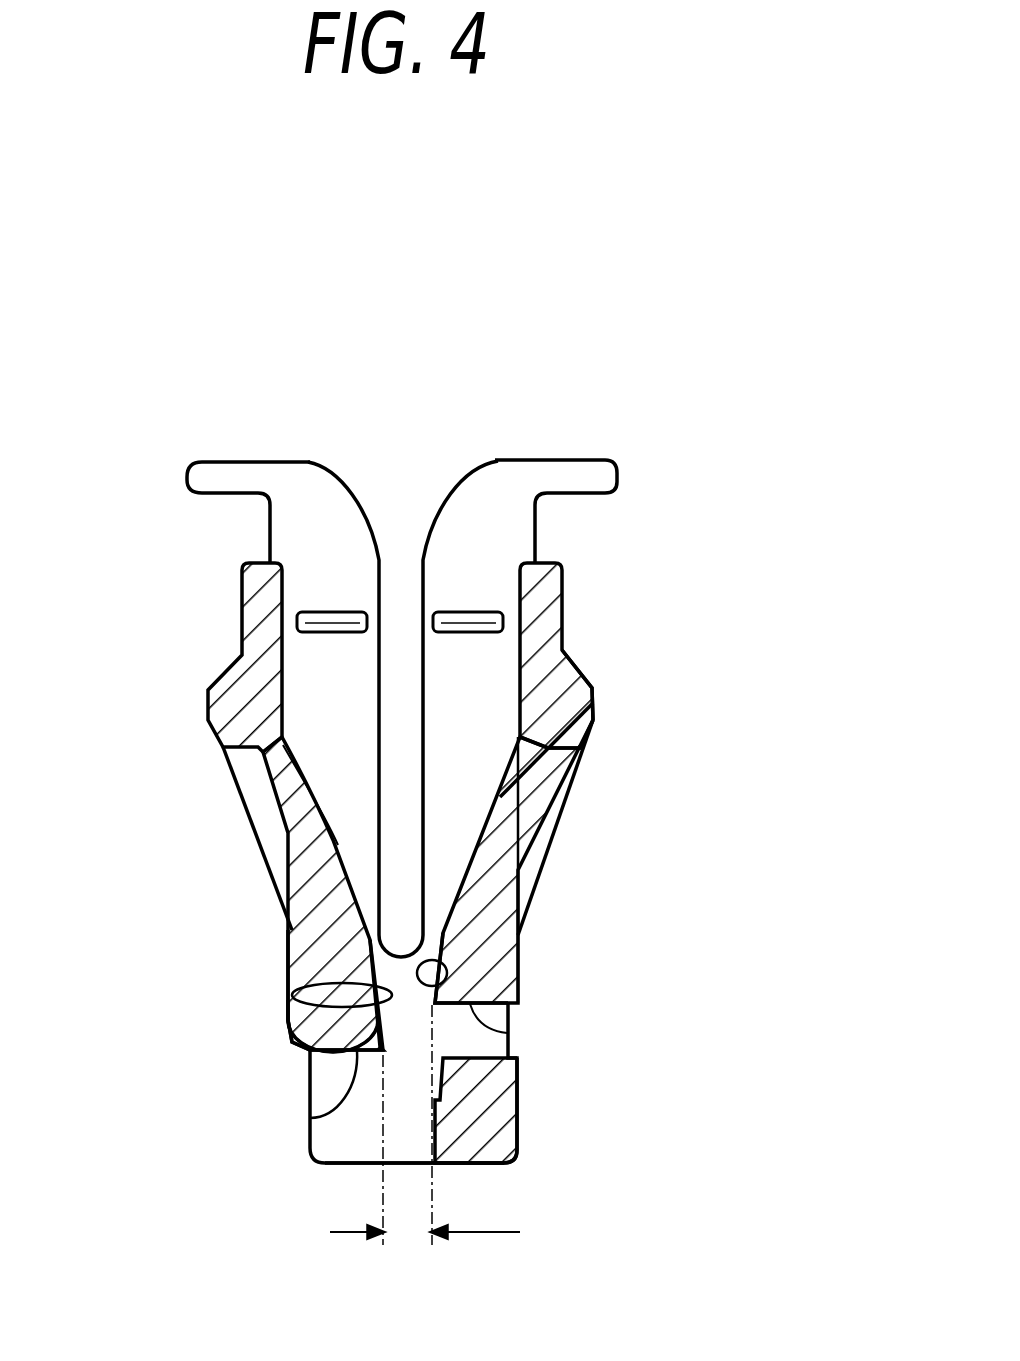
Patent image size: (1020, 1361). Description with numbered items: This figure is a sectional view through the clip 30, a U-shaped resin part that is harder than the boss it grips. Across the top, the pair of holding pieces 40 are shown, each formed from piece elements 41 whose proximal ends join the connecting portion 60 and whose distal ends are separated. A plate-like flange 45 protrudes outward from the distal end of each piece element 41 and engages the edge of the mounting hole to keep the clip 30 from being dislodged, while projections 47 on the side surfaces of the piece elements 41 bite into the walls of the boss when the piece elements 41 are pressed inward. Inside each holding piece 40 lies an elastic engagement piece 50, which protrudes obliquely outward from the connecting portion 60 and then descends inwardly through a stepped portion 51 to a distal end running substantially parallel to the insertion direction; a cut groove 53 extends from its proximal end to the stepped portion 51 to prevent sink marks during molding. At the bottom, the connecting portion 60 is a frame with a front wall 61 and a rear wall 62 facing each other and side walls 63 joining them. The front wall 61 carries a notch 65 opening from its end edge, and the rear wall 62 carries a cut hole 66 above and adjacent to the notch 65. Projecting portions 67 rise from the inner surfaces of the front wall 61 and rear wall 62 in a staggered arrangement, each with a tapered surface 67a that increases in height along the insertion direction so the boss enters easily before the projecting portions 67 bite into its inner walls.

The clip 30 is at (642, 345).
The holding piece 40 is at (508, 342).
The piece element 41 is at (305, 480).
The flange 45 is at (218, 470).
The projection 47 is at (335, 612).
The elastic engagement piece 50 is at (185, 724).
The stepped portion 51 is at (593, 690).
The cut groove 53 is at (548, 795).
The connecting portion 60 is at (580, 1091).
The front wall 61 is at (293, 1022).
The rear wall 62 is at (497, 985).
The side wall 63 is at (335, 1164).
The notch 65 is at (310, 1118).
The cut hole 66 is at (510, 1027).
The projecting portion 67 is at (293, 1023).
The tapered surface 67a is at (297, 990).